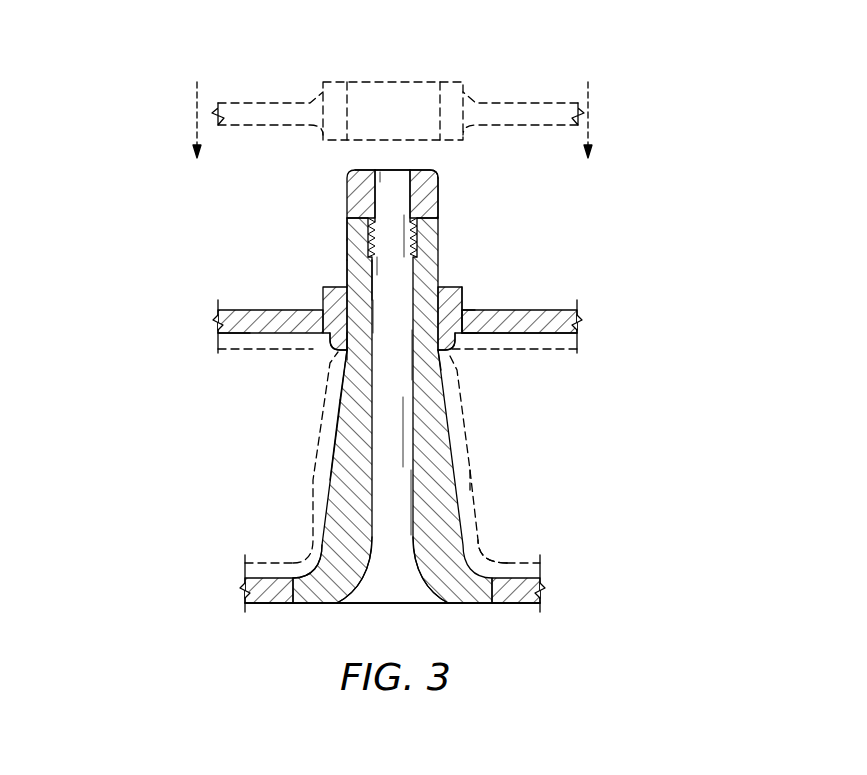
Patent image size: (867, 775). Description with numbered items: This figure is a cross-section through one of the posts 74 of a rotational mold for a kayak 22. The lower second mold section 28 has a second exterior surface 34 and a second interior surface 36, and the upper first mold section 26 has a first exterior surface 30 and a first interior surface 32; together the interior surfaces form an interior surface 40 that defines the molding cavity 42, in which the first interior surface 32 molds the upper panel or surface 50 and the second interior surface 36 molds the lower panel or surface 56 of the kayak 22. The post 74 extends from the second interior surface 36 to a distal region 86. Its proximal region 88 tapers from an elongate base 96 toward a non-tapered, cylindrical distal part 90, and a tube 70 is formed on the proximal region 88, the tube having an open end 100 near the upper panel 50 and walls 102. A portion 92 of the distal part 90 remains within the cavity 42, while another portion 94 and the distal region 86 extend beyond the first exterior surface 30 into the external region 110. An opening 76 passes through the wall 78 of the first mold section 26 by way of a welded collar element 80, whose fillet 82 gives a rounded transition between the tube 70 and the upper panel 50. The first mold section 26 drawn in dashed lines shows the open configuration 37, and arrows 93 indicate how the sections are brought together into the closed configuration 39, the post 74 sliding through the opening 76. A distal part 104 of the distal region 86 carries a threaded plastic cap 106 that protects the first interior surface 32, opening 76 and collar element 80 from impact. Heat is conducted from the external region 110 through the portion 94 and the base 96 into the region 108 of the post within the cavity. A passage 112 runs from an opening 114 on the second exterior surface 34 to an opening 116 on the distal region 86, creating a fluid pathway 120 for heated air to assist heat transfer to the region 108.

The kayak 22 is at (548, 352).
The first mold section 26 is at (548, 310).
The second mold section 28 is at (485, 604).
The first exterior surface 30 is at (458, 345).
The first interior surface 32 is at (468, 386).
The second exterior surface 34 is at (532, 604).
The second interior surface 36 is at (540, 569).
The open configuration 37 is at (150, 124).
The closed configuration 39 is at (124, 357).
The interior surface 40 is at (577, 335).
The molding cavity 42 is at (147, 488).
The upper panel or surface 50 is at (508, 352).
The lower panel or surface 56 is at (507, 560).
The tube 70 is at (471, 470).
The post 74 is at (347, 192).
The opening 76 is at (450, 268).
The wall 78 is at (530, 311).
The collar element 80 is at (323, 289).
The fillet 82 is at (326, 352).
The distal region 86 is at (311, 218).
The proximal region 88 is at (211, 422).
The distal part 90 is at (304, 248).
The portion 92 is at (341, 355).
The arrows 93 is at (197, 103).
The portion 94 is at (316, 255).
The base 96 is at (313, 556).
The open end 100 is at (470, 380).
The wall 102 is at (476, 502).
The distal part 104 is at (441, 175).
The plastic cap 106 is at (440, 196).
The region 108 is at (291, 478).
The region 110 is at (184, 197).
The passage 112 is at (391, 578).
The opening 114 is at (355, 614).
The opening 116 is at (384, 168).
The fluid pathway 120 is at (402, 547).